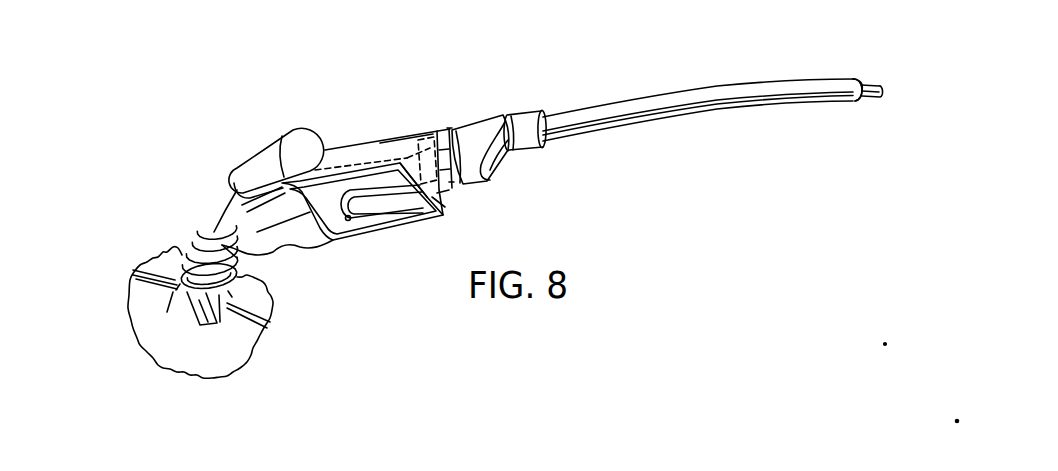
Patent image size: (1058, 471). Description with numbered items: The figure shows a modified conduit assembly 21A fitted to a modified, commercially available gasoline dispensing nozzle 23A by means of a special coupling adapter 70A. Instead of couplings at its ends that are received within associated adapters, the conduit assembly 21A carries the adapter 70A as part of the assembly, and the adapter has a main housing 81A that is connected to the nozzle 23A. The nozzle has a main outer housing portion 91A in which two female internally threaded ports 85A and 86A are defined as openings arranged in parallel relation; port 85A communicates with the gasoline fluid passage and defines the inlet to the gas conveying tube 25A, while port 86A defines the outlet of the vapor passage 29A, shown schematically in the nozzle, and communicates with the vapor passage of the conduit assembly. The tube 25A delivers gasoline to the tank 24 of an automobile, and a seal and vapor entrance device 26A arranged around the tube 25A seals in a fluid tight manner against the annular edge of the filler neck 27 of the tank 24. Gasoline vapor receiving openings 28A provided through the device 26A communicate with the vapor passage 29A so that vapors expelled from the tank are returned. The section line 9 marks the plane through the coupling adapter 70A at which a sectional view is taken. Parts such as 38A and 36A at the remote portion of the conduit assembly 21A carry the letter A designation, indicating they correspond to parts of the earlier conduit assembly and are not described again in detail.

The gasoline dispensing nozzle 23A is at (342, 138).
The vapor passage 29A is at (362, 160).
The main outer housing portion 91A is at (400, 147).
The internally threaded port 85A is at (434, 132).
The internally threaded port 86A is at (446, 207).
The section line 9 is at (443, 160).
The coupling adapter 70A is at (480, 115).
The main housing 81A is at (500, 167).
The conduit assembly 21A is at (631, 97).
The tube end 38A is at (787, 82).
The tip 36A is at (875, 84).
The seal and vapor entrance device 26A is at (176, 252).
The tank 24 is at (262, 302).
The filler neck 27 is at (153, 258).
The gasoline vapor receiving openings 28A is at (182, 285).
The gas conveying tube 25A is at (192, 324).